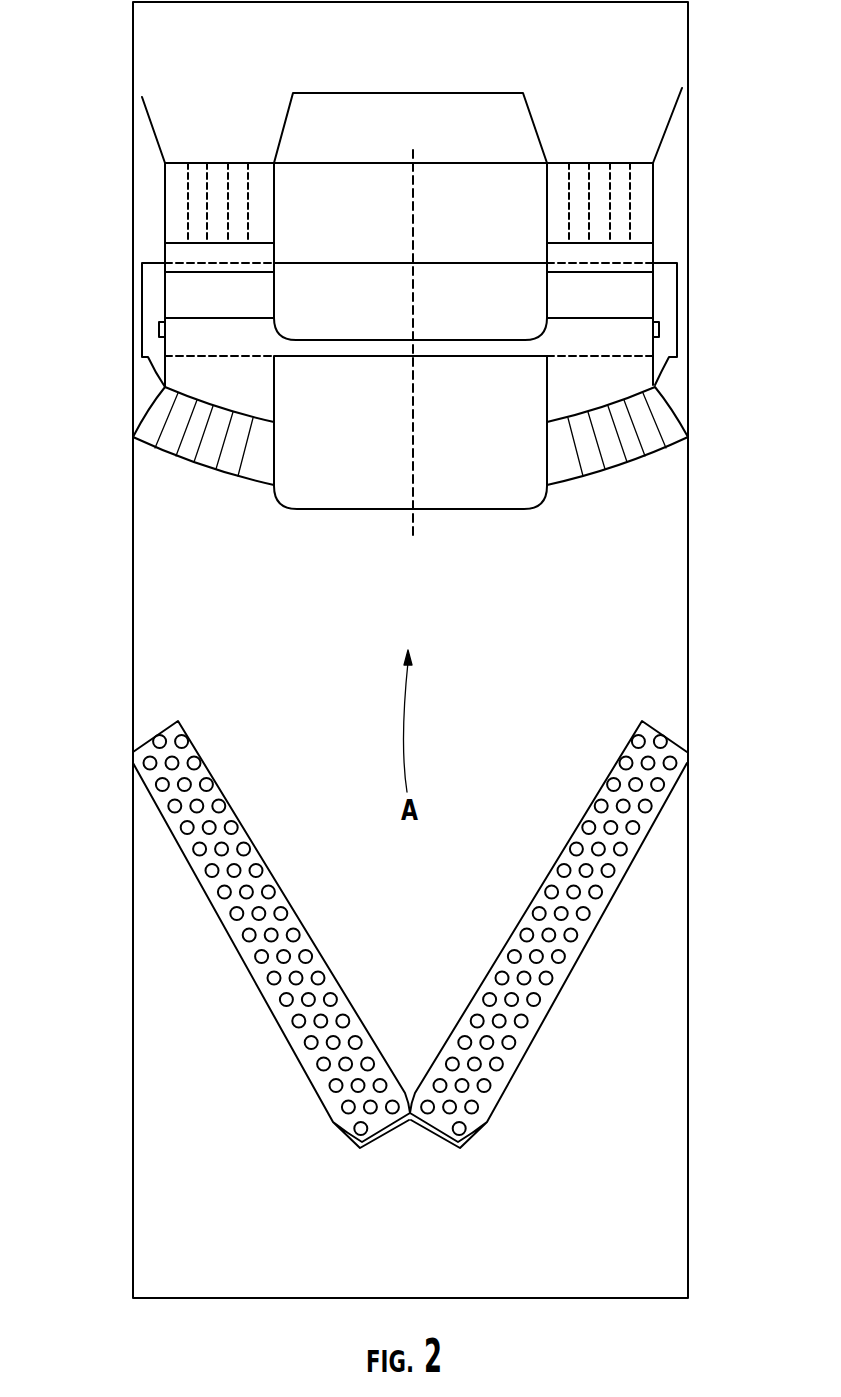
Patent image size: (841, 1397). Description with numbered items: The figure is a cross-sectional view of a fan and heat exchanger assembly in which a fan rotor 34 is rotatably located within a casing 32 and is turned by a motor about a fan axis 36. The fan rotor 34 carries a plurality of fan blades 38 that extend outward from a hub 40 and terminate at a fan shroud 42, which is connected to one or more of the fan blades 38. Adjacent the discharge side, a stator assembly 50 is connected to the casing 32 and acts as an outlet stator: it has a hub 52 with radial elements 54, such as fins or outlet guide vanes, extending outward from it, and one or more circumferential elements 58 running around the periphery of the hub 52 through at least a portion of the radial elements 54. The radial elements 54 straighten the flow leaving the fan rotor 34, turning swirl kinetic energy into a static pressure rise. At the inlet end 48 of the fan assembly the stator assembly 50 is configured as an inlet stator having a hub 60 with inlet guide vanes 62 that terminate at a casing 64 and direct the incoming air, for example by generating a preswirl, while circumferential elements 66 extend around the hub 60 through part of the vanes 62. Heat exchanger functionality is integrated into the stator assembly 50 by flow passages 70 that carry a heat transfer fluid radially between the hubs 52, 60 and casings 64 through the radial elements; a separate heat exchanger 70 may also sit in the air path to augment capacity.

The casing 32 is at (677, 327).
The fan rotor 34 is at (143, 300).
The fan axis 36 is at (413, 527).
The fan blades 38 is at (181, 294).
The hub 40 is at (276, 302).
The fan shroud 42 is at (653, 296).
The inlet end 48 is at (200, 355).
The stator assembly 50 is at (672, 200).
The hub 52 is at (276, 198).
The radial elements 54 is at (640, 180).
The circumferential elements 58 is at (610, 187).
The hub 60 is at (545, 458).
The inlet guide vanes 62 is at (265, 467).
The casing 64 is at (667, 421).
The circumferential elements 66 is at (168, 462).
The flow passages 70 is at (615, 888).